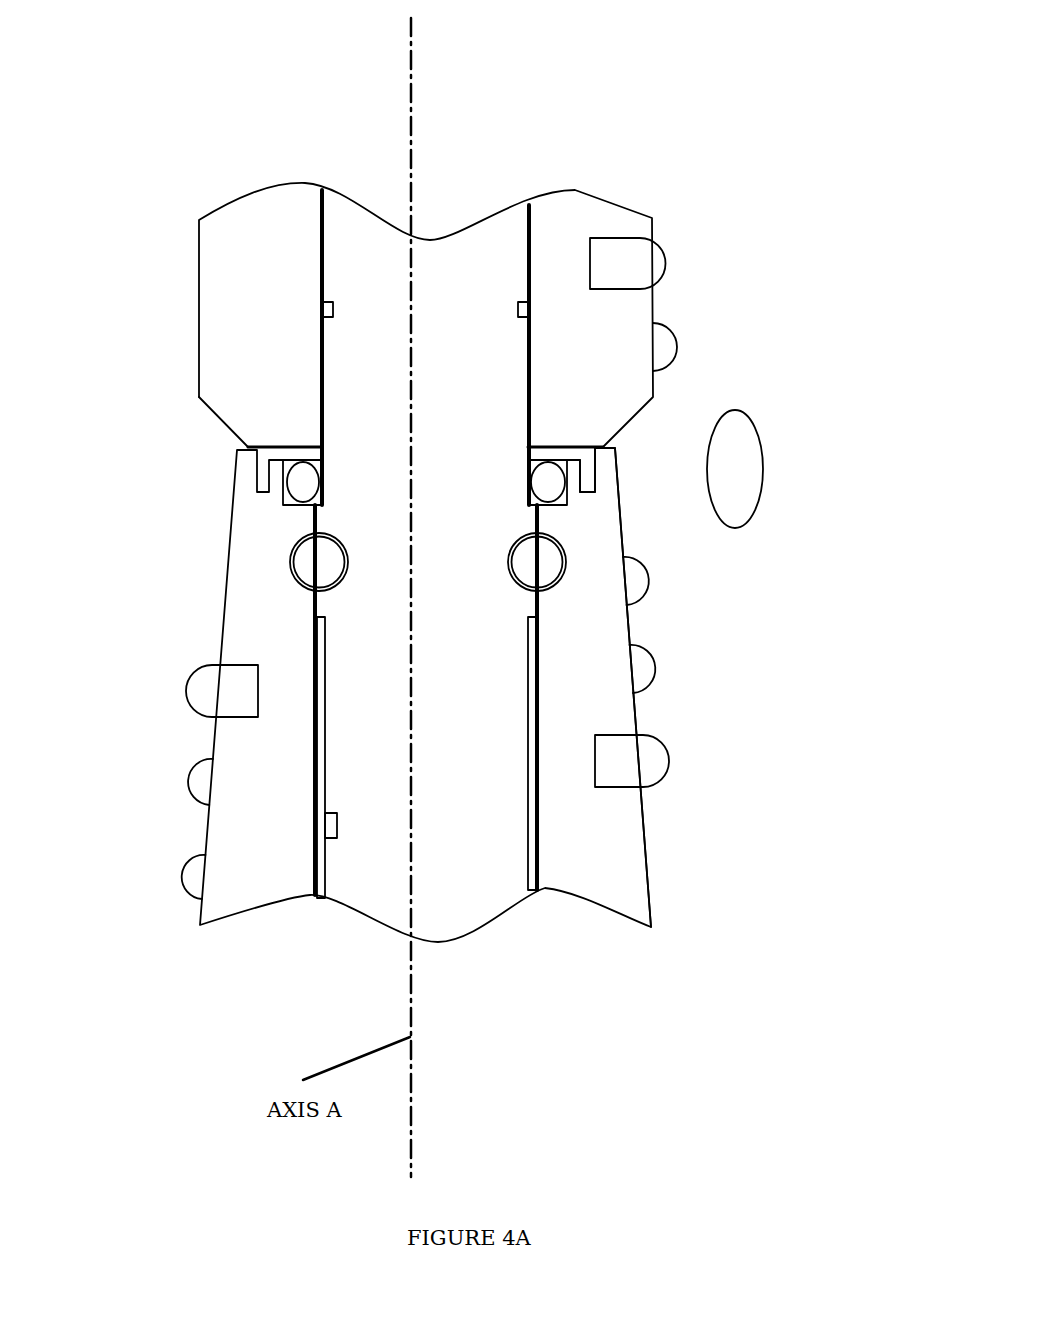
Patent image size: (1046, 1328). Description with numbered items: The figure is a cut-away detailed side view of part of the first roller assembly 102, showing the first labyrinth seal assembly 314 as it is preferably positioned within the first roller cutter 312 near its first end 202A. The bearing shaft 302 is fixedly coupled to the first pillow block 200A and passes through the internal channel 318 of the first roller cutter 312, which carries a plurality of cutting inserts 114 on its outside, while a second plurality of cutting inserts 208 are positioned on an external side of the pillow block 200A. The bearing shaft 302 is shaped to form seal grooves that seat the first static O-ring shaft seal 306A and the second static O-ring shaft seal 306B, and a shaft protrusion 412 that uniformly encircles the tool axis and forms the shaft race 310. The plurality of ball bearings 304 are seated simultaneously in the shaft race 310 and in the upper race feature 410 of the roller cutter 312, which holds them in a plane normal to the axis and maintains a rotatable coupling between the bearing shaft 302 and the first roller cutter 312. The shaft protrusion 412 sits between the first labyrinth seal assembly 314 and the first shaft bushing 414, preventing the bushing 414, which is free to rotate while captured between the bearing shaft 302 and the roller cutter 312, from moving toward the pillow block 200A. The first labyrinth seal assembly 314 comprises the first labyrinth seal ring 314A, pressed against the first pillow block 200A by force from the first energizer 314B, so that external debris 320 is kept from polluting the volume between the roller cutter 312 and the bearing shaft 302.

The first roller assembly 102 is at (768, 80).
The cutting inserts 114 is at (653, 785).
The first pillow block 200A is at (648, 213).
The first end 202A is at (240, 450).
The second plurality of cutting inserts 208 is at (665, 263).
The bearing shaft 302 is at (485, 230).
The ball bearings 304 is at (538, 570).
The first static O-ring shaft seal 306A is at (310, 315).
The second static O-ring shaft seal 306B is at (538, 293).
The shaft race 310 is at (323, 580).
The first roller cutter 312 is at (645, 848).
The first labyrinth seal assembly 314 is at (657, 445).
The first labyrinth seal ring 314A is at (593, 463).
The first energizer 314B is at (540, 475).
The internal channel 318 is at (315, 210).
The external debris 320 is at (757, 518).
The upper race feature 410 is at (563, 573).
The shaft protrusion 412 is at (537, 605).
The first shaft bushing 414 is at (530, 708).